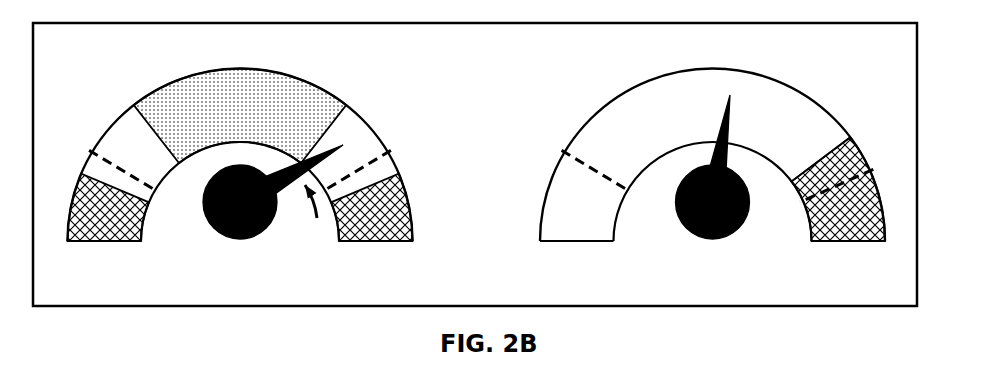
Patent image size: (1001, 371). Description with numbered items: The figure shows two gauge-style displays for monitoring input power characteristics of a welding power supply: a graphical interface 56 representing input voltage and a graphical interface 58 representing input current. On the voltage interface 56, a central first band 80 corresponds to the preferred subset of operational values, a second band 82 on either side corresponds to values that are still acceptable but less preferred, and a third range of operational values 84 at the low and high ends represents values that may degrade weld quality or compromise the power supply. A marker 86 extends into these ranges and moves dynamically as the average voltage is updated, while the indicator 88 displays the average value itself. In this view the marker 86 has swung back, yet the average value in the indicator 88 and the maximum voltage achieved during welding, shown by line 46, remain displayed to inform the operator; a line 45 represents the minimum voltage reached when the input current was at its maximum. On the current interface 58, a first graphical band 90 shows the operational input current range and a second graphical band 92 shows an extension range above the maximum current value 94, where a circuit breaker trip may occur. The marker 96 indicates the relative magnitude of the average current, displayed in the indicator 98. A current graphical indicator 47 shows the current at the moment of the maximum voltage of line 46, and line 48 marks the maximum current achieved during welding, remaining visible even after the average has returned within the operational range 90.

The graphical interface 56 is at (255, 154).
The graphical interface 58 is at (726, 155).
The line 45 is at (90, 148).
The line 46 is at (393, 150).
The current graphical indicator 47 is at (565, 153).
The line 48 is at (873, 167).
The first band 80 is at (312, 80).
The second band 82 is at (373, 127).
The third range of operational values 84 is at (413, 212).
The marker 86 is at (316, 146).
The indicator 88 is at (213, 233).
The first graphical band 90 is at (578, 130).
The second graphical band 92 is at (808, 227).
The current value 94 is at (830, 142).
The marker 96 is at (734, 121).
The indicator 98 is at (685, 233).